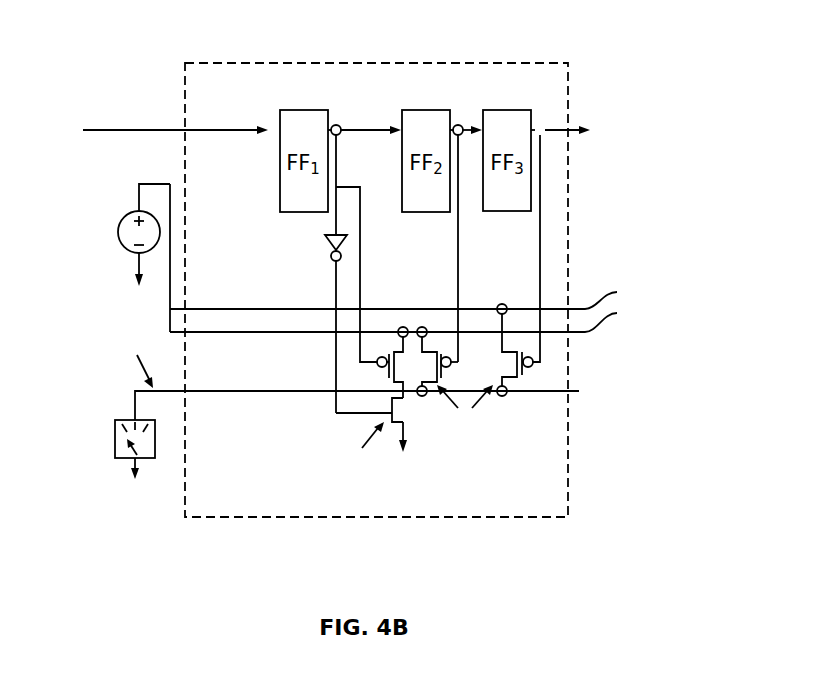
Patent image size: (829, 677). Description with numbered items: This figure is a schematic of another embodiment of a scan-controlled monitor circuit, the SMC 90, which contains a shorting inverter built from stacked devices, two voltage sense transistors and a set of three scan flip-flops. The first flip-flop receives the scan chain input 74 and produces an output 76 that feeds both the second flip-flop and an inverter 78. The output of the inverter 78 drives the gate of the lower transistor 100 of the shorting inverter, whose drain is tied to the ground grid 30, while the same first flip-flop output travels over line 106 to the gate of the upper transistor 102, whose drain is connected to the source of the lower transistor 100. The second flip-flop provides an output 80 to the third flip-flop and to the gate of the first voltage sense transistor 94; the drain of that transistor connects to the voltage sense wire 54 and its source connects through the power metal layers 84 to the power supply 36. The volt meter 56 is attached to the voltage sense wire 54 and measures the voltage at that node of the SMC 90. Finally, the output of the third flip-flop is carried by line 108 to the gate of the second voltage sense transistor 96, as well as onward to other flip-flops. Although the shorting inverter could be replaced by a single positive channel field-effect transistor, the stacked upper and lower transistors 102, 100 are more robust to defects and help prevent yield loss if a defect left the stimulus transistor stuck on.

The SMC embodiment 90 is at (620, 42).
The scan chain input 74 is at (172, 130).
The output of flip-flop FF1 76 is at (338, 125).
The output of flip-flop FF2 80 is at (460, 125).
The inverter 78 is at (325, 244).
The line 106 is at (362, 275).
The line 108 is at (538, 240).
The metal layers M1 or M10 84 is at (407, 273).
The power supply 36 is at (120, 248).
The voltage sense wire 54 is at (175, 390).
The volt meter 56 is at (115, 420).
The upper transistor of the shorting inverter 102 is at (381, 368).
The first voltage sense transistor 94 is at (449, 372).
The second voltage sense transistor 96 is at (523, 372).
The lower transistor of the shorting inverter 100 is at (392, 423).
The ground grid 30 is at (404, 452).